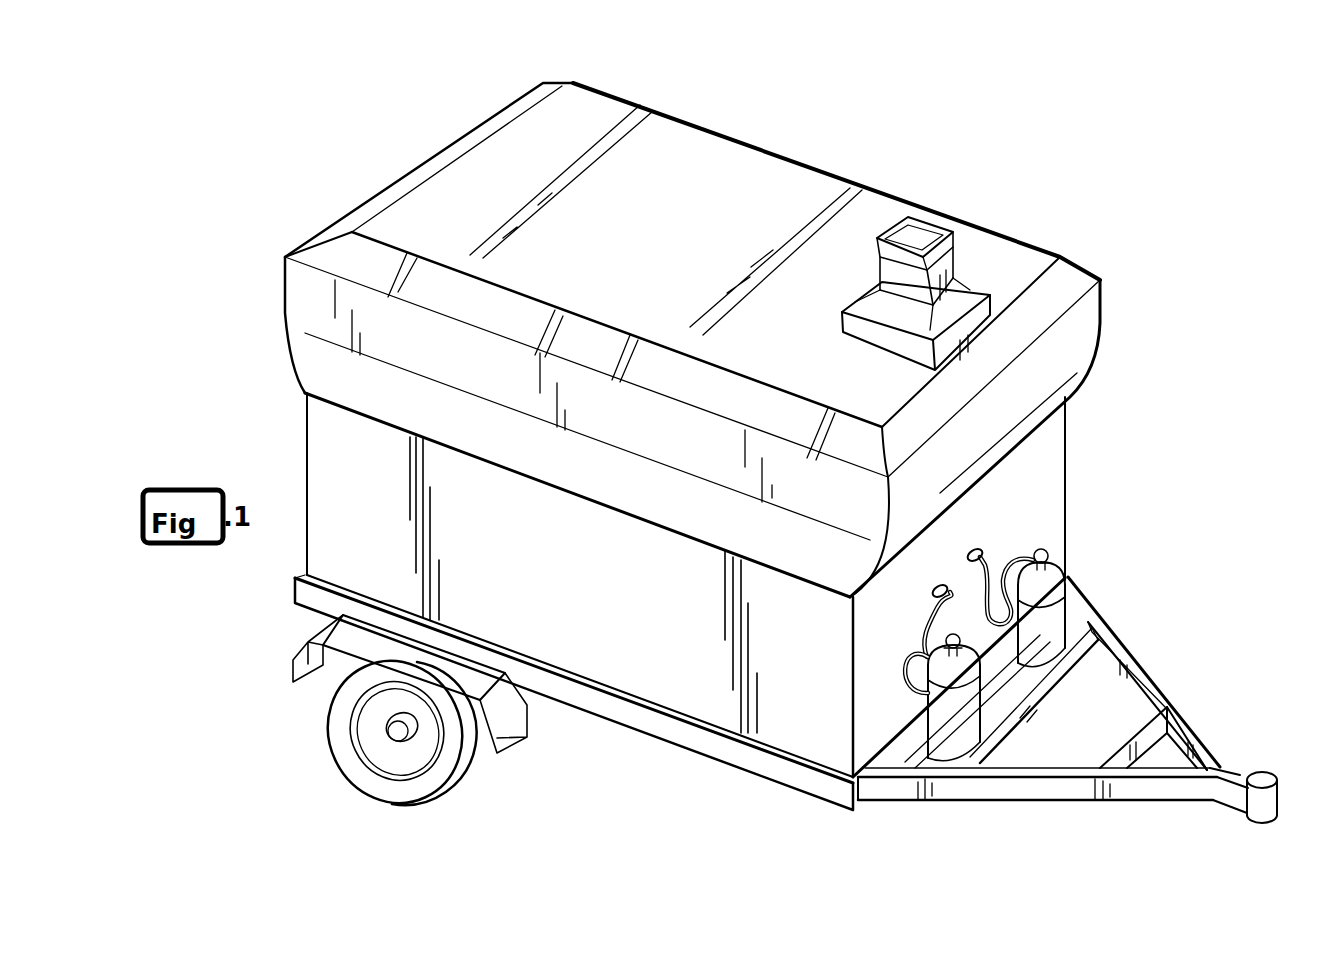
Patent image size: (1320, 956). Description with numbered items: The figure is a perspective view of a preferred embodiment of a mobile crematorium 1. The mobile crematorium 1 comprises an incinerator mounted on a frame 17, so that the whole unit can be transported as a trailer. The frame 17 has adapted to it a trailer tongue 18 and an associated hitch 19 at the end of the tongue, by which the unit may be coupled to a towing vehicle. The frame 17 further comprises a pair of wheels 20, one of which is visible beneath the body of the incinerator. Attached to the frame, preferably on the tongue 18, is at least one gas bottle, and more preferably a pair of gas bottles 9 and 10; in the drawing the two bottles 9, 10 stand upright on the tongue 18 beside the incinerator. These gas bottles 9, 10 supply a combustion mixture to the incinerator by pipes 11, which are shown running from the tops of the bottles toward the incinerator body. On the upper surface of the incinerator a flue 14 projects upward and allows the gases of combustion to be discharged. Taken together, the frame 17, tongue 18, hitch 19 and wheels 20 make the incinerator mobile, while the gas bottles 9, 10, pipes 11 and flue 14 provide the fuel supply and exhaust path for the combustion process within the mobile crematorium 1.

The mobile crematorium 1 is at (803, 127).
The gas bottle 9 is at (1053, 613).
The gas bottle 10 is at (960, 732).
The pipes 11 is at (927, 620).
The flue 14 is at (930, 227).
The frame 17 is at (675, 735).
The trailer tongue 18 is at (1172, 788).
The hitch 19 is at (1270, 777).
The wheels 20 is at (453, 790).